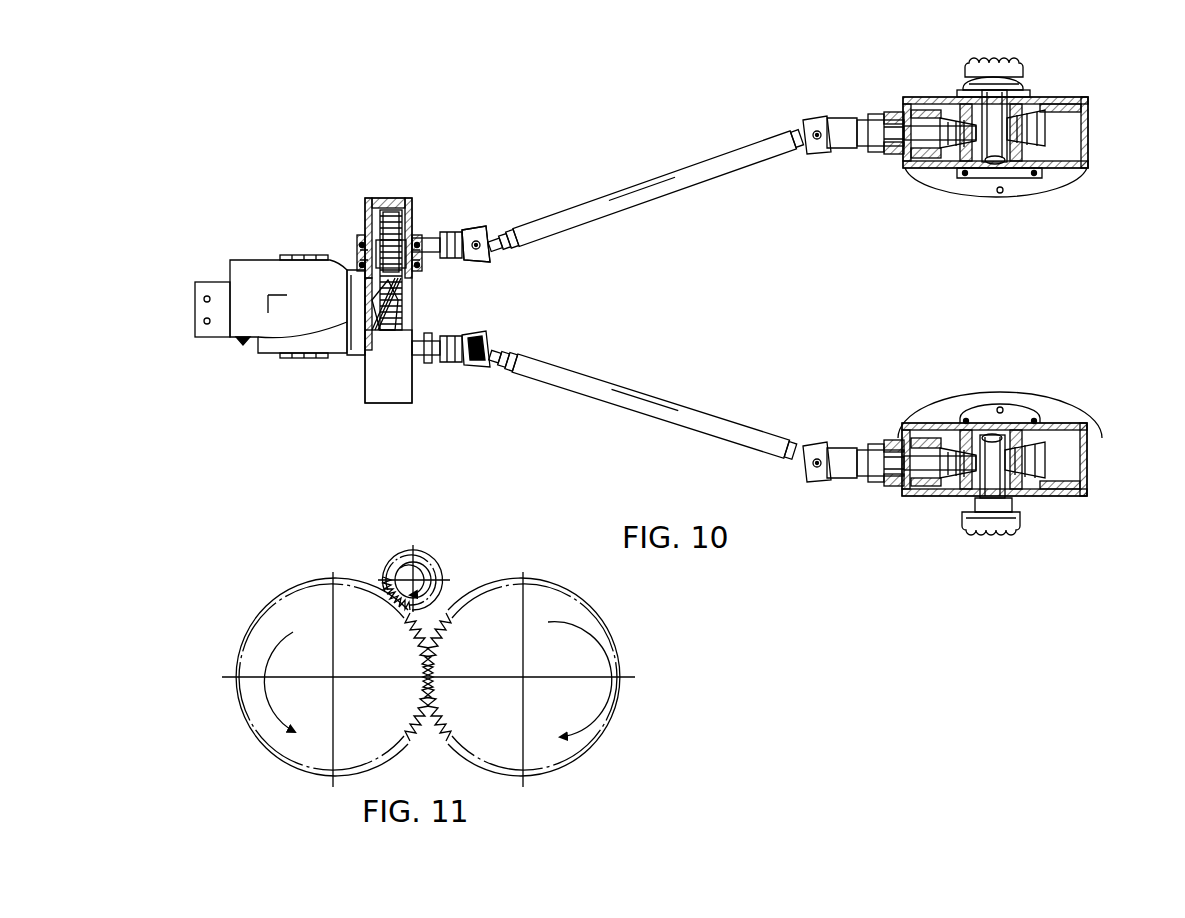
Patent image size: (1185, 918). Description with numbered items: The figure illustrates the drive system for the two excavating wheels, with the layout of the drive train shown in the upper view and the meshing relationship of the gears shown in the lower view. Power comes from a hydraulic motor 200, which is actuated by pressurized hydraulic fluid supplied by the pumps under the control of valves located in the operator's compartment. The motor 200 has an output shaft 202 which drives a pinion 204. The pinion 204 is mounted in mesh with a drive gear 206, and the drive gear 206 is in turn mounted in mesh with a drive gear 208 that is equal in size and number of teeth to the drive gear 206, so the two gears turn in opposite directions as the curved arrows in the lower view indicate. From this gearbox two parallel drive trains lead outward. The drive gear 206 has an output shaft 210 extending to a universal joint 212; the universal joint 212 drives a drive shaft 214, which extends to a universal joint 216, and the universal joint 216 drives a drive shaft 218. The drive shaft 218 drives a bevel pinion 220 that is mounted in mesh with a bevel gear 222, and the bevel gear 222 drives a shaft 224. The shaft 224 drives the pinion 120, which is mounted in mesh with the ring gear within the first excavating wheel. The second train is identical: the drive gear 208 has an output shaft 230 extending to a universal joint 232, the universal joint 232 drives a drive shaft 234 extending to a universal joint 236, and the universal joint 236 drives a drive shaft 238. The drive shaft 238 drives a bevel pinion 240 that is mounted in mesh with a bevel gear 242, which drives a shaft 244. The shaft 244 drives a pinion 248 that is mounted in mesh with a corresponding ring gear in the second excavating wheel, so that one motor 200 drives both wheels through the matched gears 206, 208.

In FIG. 10, the pinion 120 is at (996, 530).
In FIG. 10, the hydraulic motor 200 is at (246, 278).
In FIG. 10, the output shaft 202 is at (372, 310).
In FIG. 10, the pinion 204 is at (384, 302).
In FIG. 11, the pinion 204 is at (390, 562).
In FIG. 10, the drive gear 206 is at (396, 293).
In FIG. 11, the drive gear 206 is at (256, 656).
In FIG. 10, the drive gear 208 is at (395, 213).
In FIG. 11, the drive gear 208 is at (600, 686).
In FIG. 10, the output shaft 210 is at (430, 360).
In FIG. 10, the universal joint 212 is at (478, 366).
In FIG. 10, the drive shaft 214 is at (638, 395).
In FIG. 10, the universal joint 216 is at (828, 458).
In FIG. 10, the drive shaft 218 is at (897, 476).
In FIG. 10, the bevel pinion 220 is at (932, 446).
In FIG. 10, the bevel gear 222 is at (1062, 466).
In FIG. 10, the shaft 224 is at (1008, 490).
In FIG. 10, the output shaft 230 is at (426, 242).
In FIG. 10, the universal joint 232 is at (483, 258).
In FIG. 10, the drive shaft 234 is at (614, 192).
In FIG. 10, the universal joint 236 is at (828, 128).
In FIG. 10, the drive shaft 238 is at (890, 160).
In FIG. 10, the bevel pinion 240 is at (928, 160).
In FIG. 10, the bevel gear 242 is at (1090, 148).
In FIG. 10, the shaft 244 is at (1012, 150).
In FIG. 10, the pinion 248 is at (1022, 72).